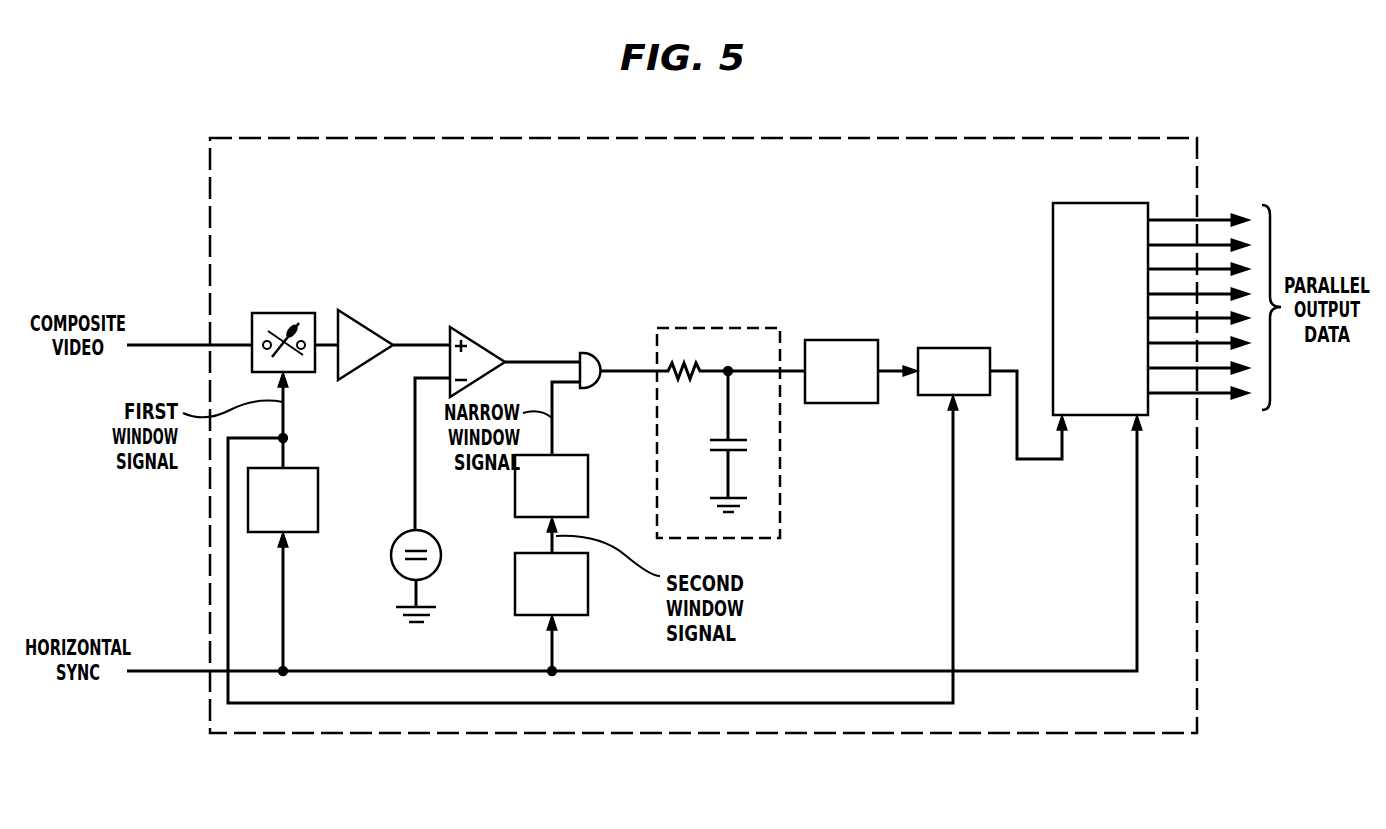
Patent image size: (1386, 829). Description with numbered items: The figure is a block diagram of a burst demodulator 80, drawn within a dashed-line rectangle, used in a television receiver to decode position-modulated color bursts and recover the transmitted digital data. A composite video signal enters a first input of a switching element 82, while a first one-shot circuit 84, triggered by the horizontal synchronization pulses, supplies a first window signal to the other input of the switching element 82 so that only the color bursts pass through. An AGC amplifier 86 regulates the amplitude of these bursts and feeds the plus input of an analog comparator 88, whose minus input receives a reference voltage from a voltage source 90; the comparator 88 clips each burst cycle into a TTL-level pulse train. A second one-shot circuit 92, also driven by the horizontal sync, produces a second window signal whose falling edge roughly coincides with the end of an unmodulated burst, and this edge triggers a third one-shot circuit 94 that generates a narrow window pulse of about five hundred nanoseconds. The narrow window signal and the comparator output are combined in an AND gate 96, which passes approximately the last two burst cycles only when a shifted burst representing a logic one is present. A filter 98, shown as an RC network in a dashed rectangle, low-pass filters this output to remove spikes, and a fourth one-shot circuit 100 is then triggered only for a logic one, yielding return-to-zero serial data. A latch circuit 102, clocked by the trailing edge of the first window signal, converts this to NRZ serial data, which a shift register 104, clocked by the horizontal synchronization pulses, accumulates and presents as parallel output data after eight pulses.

The burst demodulator 80 is at (546, 196).
The switching element 82 is at (283, 312).
The first one-shot circuit 84 is at (318, 481).
The AGC amplifier 86 is at (365, 323).
The comparator 88 is at (462, 327).
The voltage source 90 is at (393, 548).
The second one-shot circuit 92 is at (588, 578).
The third one-shot circuit 94 is at (588, 462).
The AND gate 96 is at (593, 355).
The filter 98 is at (730, 328).
The fourth one-shot circuit 100 is at (845, 340).
The latch circuit 102 is at (930, 348).
The shift register 104 is at (1053, 250).